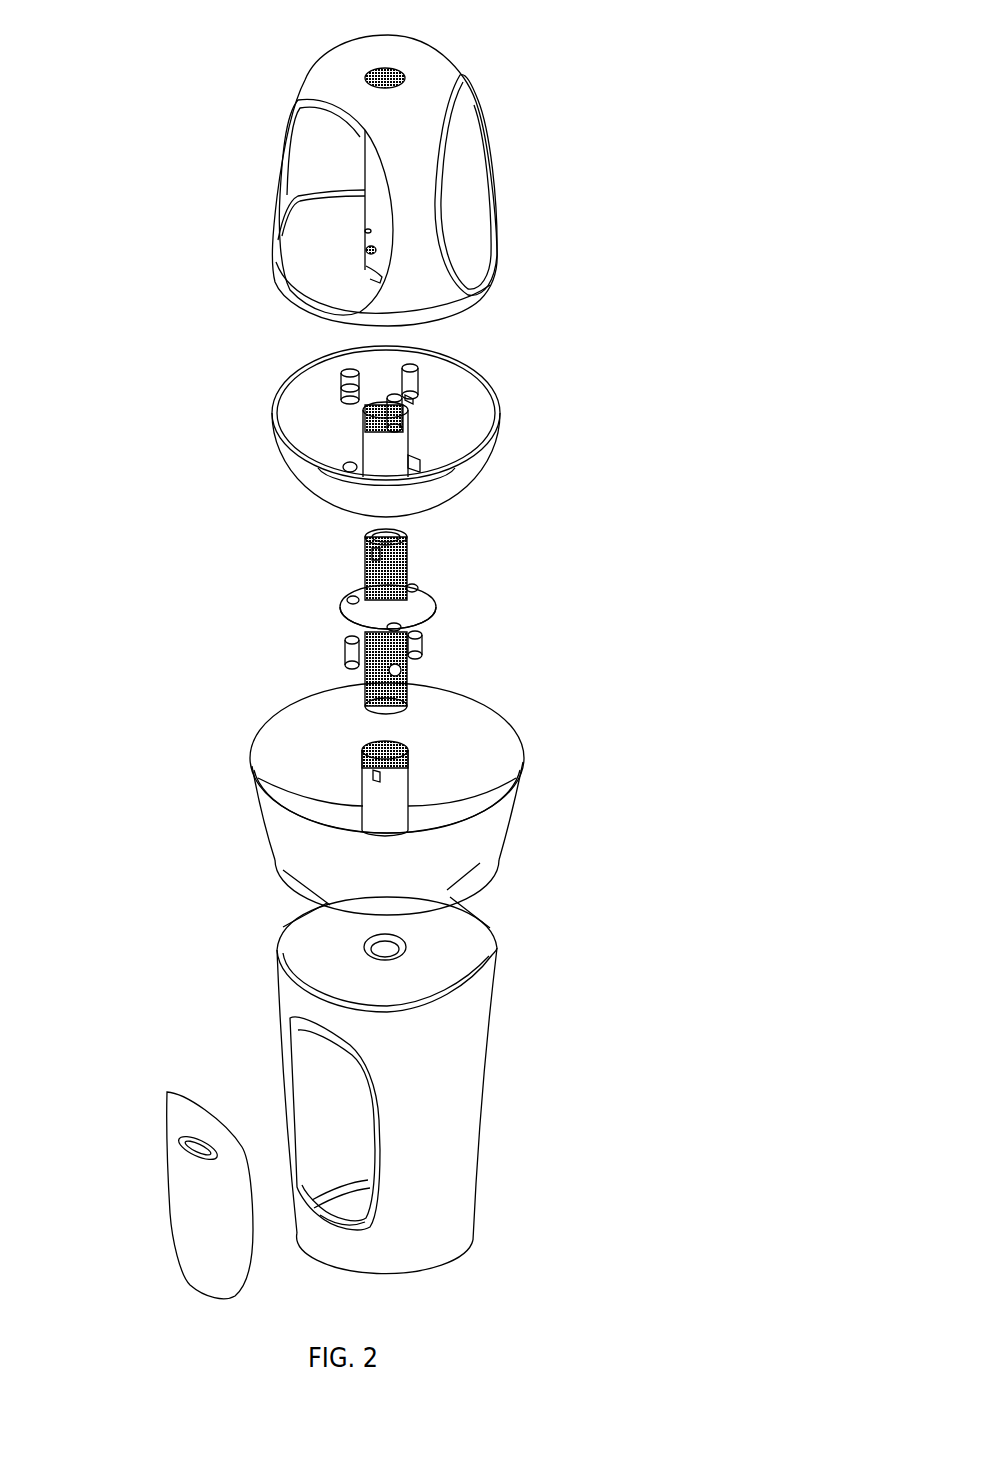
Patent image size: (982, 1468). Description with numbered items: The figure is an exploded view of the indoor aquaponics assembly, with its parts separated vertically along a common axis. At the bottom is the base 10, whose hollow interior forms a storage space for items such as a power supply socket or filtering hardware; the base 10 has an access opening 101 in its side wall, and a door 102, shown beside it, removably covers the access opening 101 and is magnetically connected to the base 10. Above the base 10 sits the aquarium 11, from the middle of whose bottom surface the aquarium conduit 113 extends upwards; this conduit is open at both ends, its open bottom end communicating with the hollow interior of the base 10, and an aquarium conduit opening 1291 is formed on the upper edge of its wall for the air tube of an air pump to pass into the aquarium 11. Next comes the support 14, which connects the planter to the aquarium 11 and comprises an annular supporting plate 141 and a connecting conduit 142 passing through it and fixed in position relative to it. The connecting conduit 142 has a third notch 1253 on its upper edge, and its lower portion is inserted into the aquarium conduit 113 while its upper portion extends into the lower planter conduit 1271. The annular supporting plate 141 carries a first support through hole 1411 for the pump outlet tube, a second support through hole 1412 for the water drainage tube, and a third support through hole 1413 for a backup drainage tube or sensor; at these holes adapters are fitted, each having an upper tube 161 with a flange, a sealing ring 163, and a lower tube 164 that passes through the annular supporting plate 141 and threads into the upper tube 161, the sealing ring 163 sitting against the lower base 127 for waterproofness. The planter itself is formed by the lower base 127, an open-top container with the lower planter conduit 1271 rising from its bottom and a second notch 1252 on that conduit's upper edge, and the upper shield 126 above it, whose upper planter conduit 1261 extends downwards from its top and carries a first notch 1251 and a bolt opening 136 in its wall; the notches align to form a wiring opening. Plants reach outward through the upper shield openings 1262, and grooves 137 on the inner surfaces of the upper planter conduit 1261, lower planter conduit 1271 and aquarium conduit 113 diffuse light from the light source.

The base 10 is at (325, 1085).
The access opening 101 is at (330, 1092).
The door 102 is at (237, 1205).
The aquarium 11 is at (365, 805).
The aquarium conduit 113 is at (395, 797).
The aquarium conduit opening 1291 is at (373, 777).
The support 14 is at (377, 592).
The annular supporting plate 141 is at (422, 605).
The first support through hole 1411 is at (395, 627).
The second support through hole 1412 is at (412, 588).
The third support through hole 1413 is at (353, 600).
The connecting conduit 142 is at (392, 563).
The third notch 1253 is at (373, 552).
The lower tube 164 is at (348, 655).
The lower base 127 is at (510, 432).
The lower planter conduit 1271 is at (373, 453).
The second notch 1252 is at (373, 428).
The upper tube 161 is at (417, 372).
The sealing ring 163 is at (418, 395).
The grooves 137 is at (385, 78).
The upper shield 126 is at (503, 158).
The upper planter conduit 1261 is at (365, 230).
The upper shield openings 1262 is at (477, 247).
The bolt opening 136 is at (368, 250).
The first notch 1251 is at (368, 270).